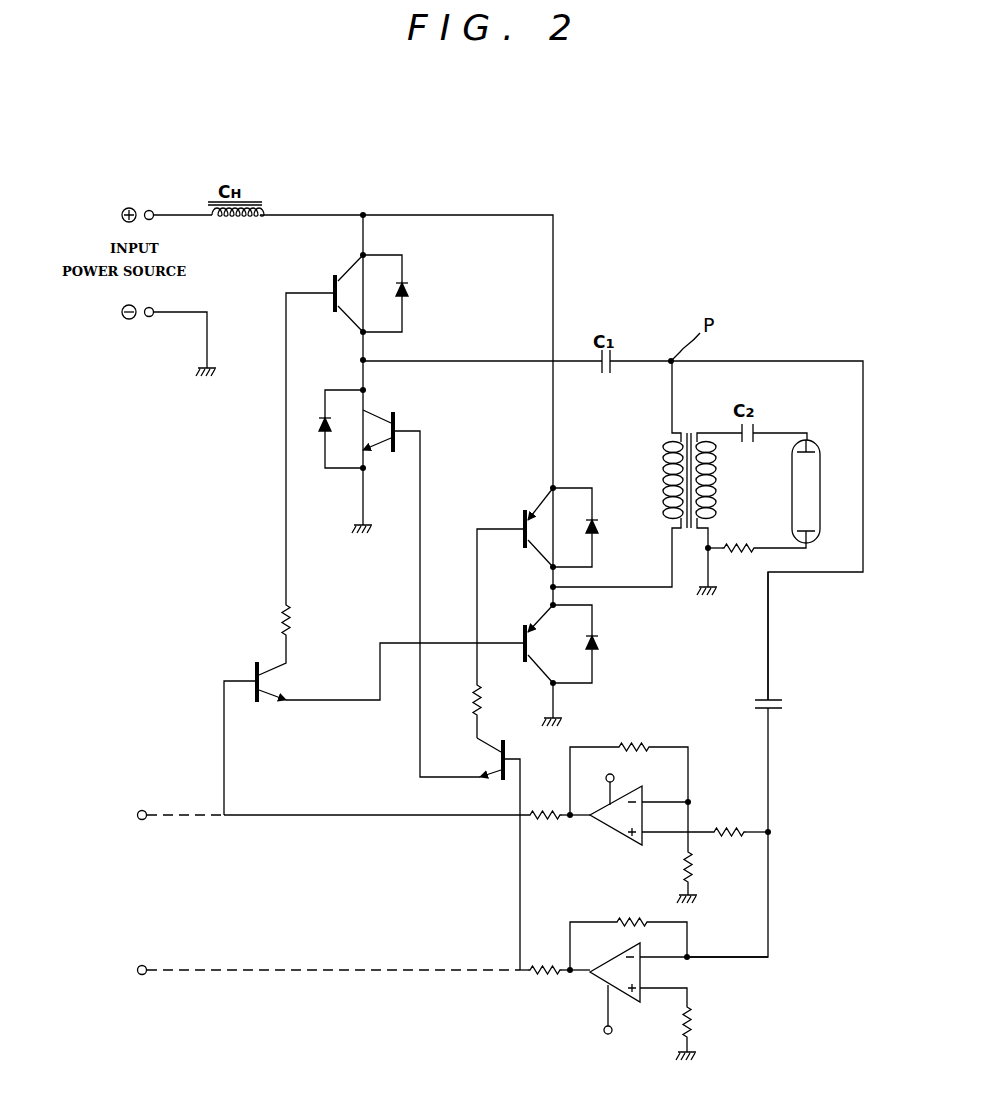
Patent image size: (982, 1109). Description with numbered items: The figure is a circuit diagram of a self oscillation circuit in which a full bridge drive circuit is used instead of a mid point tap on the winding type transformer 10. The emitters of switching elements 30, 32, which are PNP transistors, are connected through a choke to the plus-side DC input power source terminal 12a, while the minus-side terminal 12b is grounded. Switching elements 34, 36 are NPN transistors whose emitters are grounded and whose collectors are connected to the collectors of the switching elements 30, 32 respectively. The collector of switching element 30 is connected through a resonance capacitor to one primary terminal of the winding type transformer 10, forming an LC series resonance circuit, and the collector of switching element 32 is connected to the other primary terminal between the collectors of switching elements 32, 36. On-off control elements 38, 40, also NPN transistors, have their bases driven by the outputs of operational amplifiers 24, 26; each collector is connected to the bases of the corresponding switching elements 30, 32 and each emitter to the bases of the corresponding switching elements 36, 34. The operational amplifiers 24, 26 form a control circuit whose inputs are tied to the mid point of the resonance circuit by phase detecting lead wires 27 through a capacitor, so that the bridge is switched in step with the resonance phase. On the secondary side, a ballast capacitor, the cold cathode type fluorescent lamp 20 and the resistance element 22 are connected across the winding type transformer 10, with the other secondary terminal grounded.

The winding type transformer 10 is at (693, 435).
The DC input power source terminal 12a is at (151, 211).
The DC input power source terminal 12b is at (147, 318).
The cold cathode type fluorescent lamp 20 is at (819, 465).
The resistance element 22 is at (742, 548).
The operational amplifier 24 is at (644, 791).
The operational amplifier 26 is at (593, 975).
The lead wires 27 is at (768, 667).
The switching element 30 is at (357, 283).
The switching element 32 is at (540, 518).
The switching element 34 is at (372, 415).
The switching element 36 is at (540, 630).
The on-off control element 38 is at (278, 660).
The on-off control element 40 is at (484, 745).